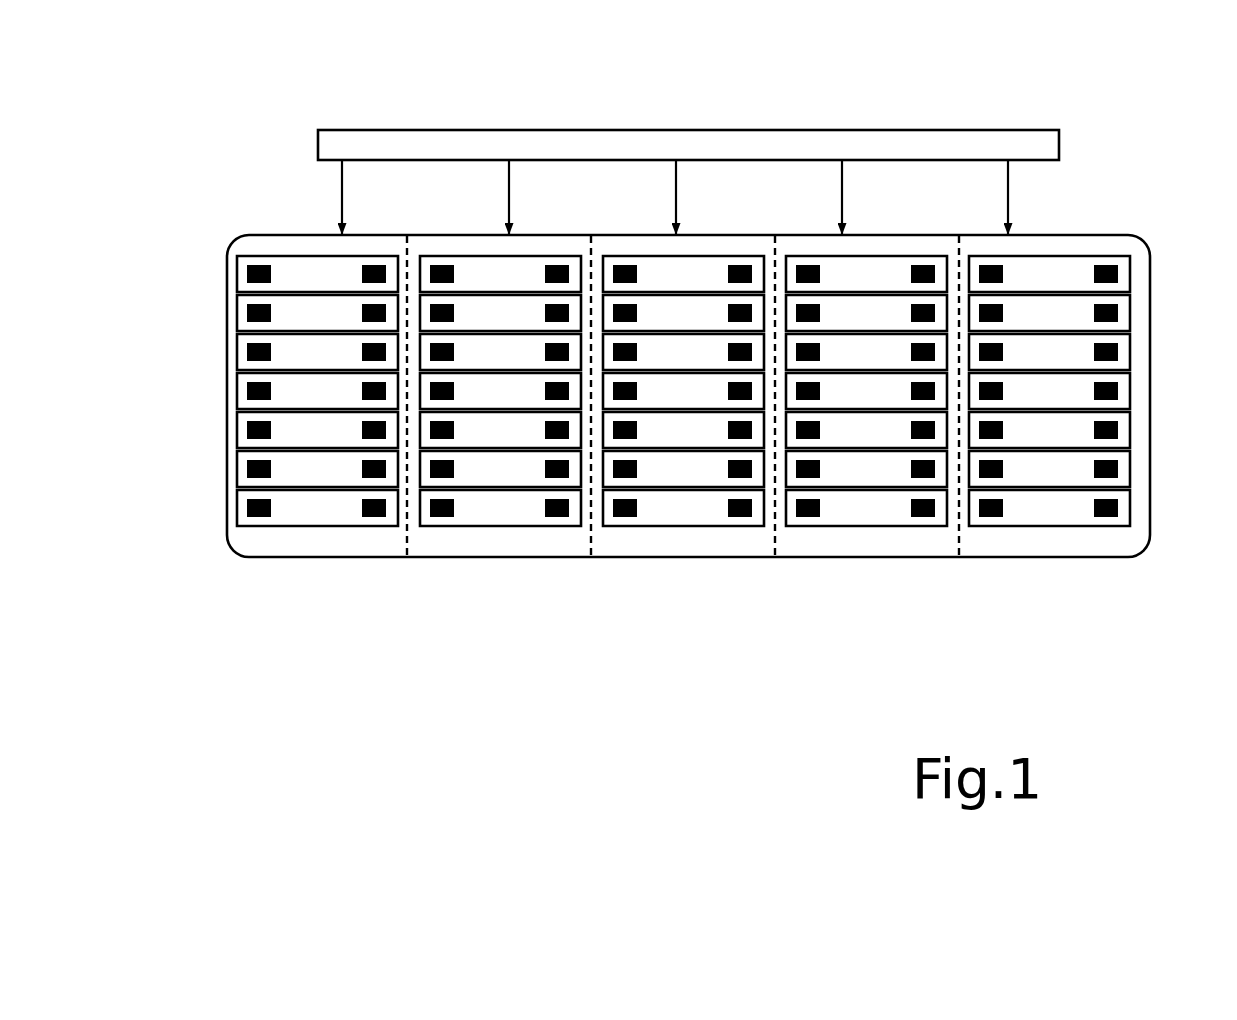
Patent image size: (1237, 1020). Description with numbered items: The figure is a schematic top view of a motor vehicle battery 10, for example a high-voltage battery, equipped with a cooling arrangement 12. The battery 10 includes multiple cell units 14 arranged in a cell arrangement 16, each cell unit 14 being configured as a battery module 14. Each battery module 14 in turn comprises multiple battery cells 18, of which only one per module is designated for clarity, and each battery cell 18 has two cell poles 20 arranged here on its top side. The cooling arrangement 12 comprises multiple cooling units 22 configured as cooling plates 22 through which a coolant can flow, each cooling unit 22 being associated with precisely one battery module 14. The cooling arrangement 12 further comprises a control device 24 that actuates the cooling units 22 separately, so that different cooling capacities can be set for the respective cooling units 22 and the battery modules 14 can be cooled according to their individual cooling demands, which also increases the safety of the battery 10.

The motor vehicle battery 10 is at (1058, 120).
The cooling arrangement 12 is at (277, 153).
The cell unit 14 is at (245, 338).
The cell arrangement 16 is at (1132, 262).
The battery cell 18 is at (300, 513).
The cell pole 20 is at (255, 518).
The cooling unit 22 is at (250, 233).
The control device 24 is at (693, 130).